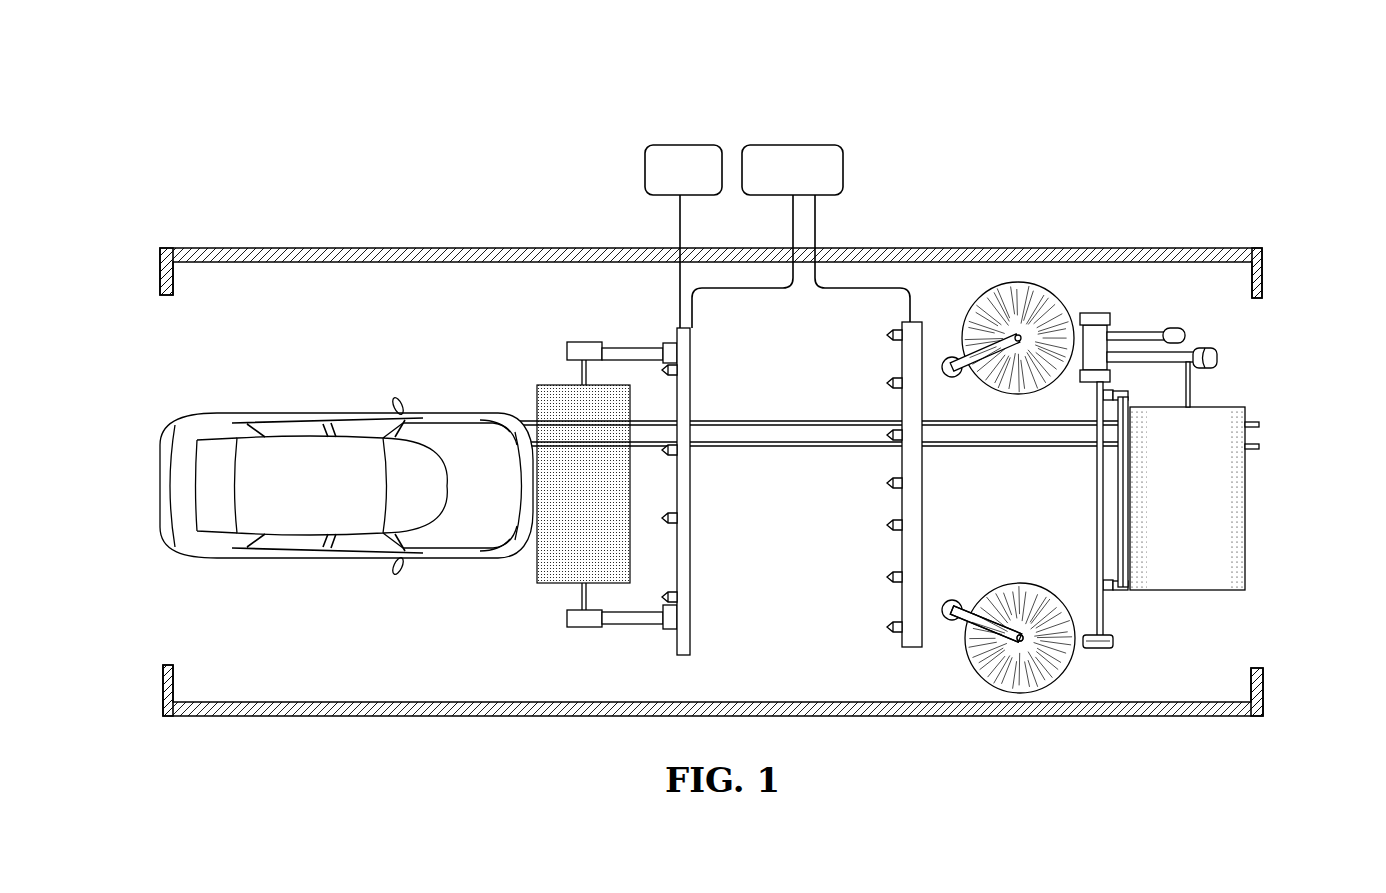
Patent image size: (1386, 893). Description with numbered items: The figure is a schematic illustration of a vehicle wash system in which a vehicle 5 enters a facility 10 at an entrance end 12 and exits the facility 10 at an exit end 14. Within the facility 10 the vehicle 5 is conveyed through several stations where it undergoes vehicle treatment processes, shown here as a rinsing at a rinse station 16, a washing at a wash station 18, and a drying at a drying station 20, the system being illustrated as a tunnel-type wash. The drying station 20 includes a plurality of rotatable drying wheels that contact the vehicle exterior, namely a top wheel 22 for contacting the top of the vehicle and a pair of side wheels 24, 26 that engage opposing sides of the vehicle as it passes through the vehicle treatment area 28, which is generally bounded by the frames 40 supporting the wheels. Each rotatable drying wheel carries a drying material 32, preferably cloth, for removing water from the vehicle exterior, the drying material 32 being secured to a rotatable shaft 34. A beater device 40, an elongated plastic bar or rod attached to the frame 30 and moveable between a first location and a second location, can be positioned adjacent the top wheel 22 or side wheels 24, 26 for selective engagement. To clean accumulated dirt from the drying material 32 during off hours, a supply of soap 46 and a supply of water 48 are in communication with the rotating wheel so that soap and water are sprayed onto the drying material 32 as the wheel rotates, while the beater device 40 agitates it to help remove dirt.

The vehicle 5 is at (300, 413).
The facility 10 is at (287, 247).
The entrance end 12 is at (160, 263).
The exit end 14 is at (1268, 268).
The rinse station 16 is at (925, 332).
The wash station 18 is at (675, 335).
The drying station 20 is at (1105, 284).
The top wheel 22 is at (1226, 406).
The side wheel 24 is at (1068, 664).
The side wheel 26 is at (1030, 322).
The vehicle treatment area 28 is at (1029, 518).
The frame 30 is at (953, 622).
The drying material 32 is at (1017, 397).
The rotatable shaft 34 is at (1088, 312).
The beater device 40 is at (952, 357).
The supply of soap 46 is at (685, 145).
The supply of water 48 is at (787, 145).